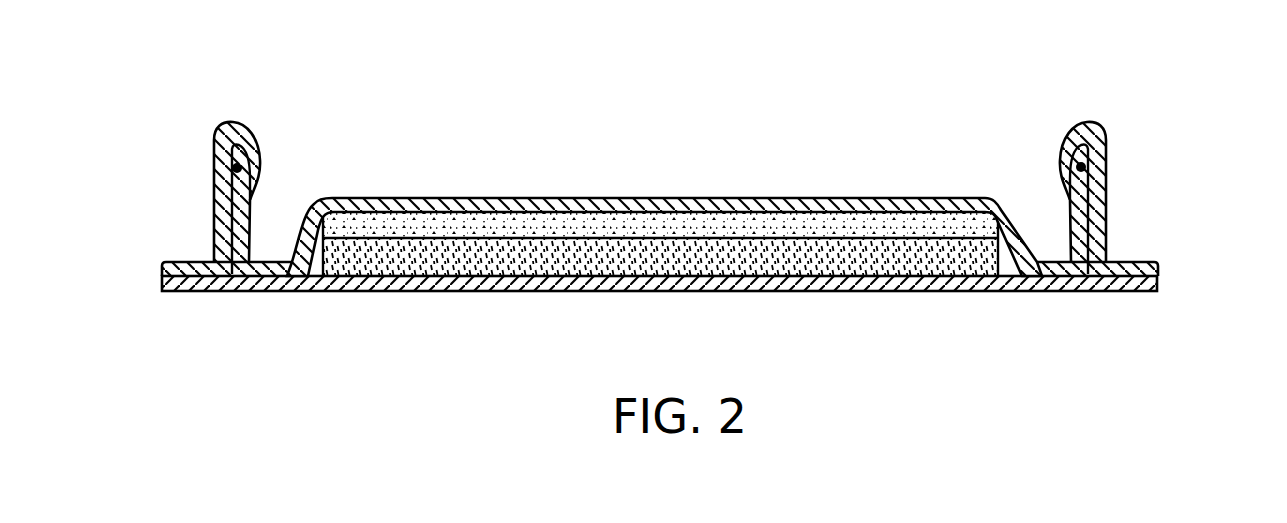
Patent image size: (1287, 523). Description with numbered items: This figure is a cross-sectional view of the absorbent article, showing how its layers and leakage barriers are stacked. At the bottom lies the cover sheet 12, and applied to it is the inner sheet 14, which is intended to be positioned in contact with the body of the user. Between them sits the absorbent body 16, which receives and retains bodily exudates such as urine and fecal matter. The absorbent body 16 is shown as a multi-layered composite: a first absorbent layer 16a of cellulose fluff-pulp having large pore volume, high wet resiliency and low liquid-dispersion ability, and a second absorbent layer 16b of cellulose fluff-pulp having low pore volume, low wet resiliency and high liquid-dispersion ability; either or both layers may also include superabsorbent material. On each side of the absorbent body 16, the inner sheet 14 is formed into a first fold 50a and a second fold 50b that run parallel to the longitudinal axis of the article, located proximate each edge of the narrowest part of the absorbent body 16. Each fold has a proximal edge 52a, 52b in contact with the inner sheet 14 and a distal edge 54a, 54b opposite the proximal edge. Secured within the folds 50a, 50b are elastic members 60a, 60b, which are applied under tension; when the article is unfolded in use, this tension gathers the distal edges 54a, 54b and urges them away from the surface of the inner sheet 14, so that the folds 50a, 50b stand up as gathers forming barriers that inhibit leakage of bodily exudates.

The cover sheet 12 is at (315, 283).
The inner sheet 14 is at (572, 204).
The absorbent body 16 is at (660, 246).
The first absorbent layer 16a is at (743, 227).
The second absorbent layer 16b is at (830, 260).
The first fold 50a is at (253, 207).
The second fold 50b is at (1105, 193).
The proximal edge 52a is at (190, 262).
The proximal edge 52b is at (1127, 261).
The distal edge 54a is at (233, 125).
The distal edge 54b is at (1088, 122).
The elastic member 60a is at (252, 157).
The elastic member 60b is at (1105, 150).